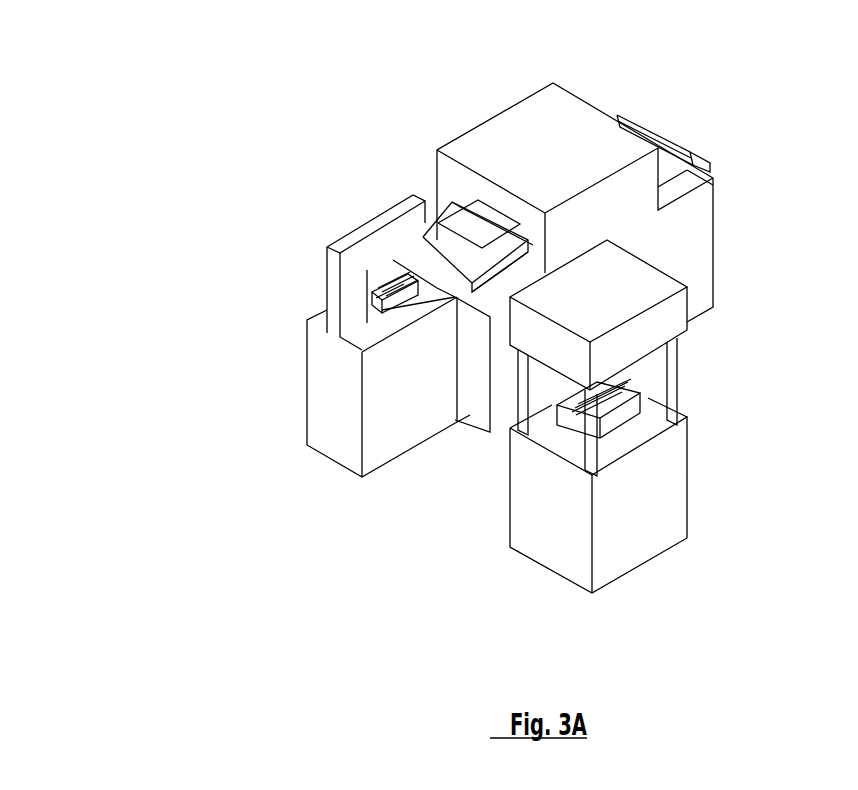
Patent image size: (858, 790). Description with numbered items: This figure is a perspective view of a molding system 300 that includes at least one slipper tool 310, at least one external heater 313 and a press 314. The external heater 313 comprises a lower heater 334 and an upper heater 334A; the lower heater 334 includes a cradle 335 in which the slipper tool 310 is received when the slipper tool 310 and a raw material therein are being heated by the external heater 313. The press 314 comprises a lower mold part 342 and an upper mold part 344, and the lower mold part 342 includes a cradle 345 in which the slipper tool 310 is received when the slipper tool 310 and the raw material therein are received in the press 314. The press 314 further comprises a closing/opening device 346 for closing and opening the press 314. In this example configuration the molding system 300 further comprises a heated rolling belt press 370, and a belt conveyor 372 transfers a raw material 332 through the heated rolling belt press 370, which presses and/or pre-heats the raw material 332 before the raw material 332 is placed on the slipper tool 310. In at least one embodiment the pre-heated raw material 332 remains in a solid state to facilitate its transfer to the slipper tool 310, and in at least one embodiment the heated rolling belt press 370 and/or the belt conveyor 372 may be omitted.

The molding system 300 is at (176, 80).
The heated rolling belt press 370 is at (486, 112).
The belt conveyor 372 is at (497, 248).
The raw material 332 is at (445, 228).
The lower heater 334 is at (318, 410).
The upper heater 334A is at (410, 270).
The external heater 313 is at (180, 248).
The slipper tool 310 is at (405, 419).
The cradle 335 is at (363, 451).
The upper mold part 344 is at (676, 326).
The closing/opening device 346 is at (678, 378).
The cradle 345 is at (618, 410).
The lower mold part 342 is at (693, 476).
The press 314 is at (782, 337).